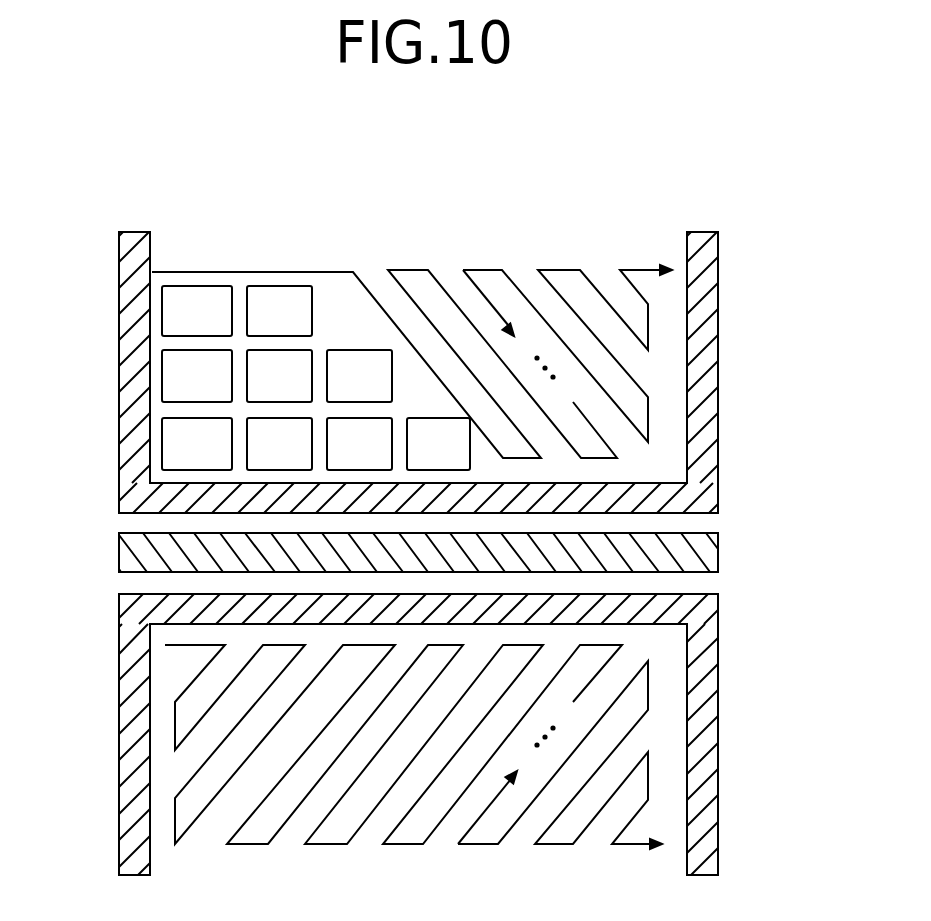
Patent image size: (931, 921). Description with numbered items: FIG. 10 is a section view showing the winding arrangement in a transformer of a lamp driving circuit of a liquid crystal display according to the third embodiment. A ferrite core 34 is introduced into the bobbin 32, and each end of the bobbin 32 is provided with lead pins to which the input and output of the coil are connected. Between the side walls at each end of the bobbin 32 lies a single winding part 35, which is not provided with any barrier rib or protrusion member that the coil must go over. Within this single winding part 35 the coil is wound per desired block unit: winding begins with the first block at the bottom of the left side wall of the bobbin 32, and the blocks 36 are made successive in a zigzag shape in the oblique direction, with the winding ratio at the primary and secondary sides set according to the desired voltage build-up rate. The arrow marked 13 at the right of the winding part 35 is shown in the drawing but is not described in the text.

The signal line 13 is at (667, 248).
The shield conductor 32 is at (707, 258).
The ground plate 34 is at (713, 555).
The wiring region 35 is at (513, 220).
The bit line group 36 is at (162, 355).